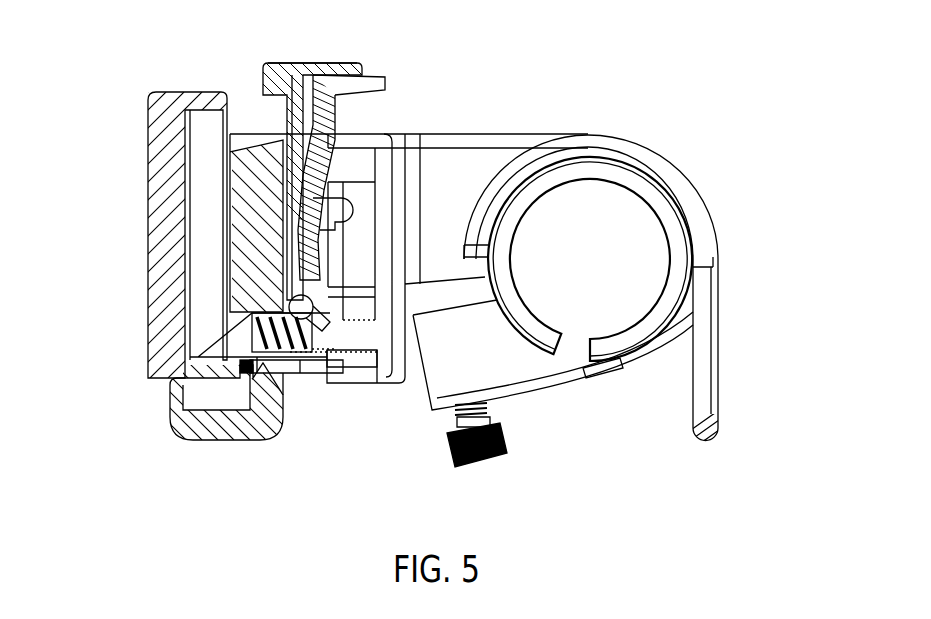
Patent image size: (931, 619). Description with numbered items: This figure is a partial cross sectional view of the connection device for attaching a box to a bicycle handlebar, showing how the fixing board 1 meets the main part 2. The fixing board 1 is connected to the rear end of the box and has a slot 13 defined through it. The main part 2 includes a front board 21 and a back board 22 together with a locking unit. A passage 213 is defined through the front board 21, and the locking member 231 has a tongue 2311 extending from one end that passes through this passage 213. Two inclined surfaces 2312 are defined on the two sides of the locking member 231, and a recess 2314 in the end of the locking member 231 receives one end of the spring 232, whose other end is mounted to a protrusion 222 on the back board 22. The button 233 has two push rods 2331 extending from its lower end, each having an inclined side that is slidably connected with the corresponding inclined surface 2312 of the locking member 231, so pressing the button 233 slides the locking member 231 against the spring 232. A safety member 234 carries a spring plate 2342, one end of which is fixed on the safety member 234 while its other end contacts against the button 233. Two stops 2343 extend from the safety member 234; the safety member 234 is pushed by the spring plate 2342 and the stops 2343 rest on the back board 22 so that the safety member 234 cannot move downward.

The fixing board 1 is at (163, 183).
The slot 13 is at (205, 345).
The tongue 2311 is at (222, 352).
The front board 21 is at (248, 173).
The passage 213 is at (288, 318).
The locking member 231 is at (315, 332).
The push rod 2331 is at (303, 302).
The safety member 234 is at (303, 127).
The button 233 is at (307, 102).
The stop 2343 is at (332, 127).
The spring plate 2342 is at (325, 178).
The back board 22 is at (380, 195).
The protrusion 222 is at (345, 340).
The inclined surface 2312 is at (300, 362).
The spring 232 is at (290, 378).
The recess 2314 is at (300, 390).
The main part 2 is at (333, 60).